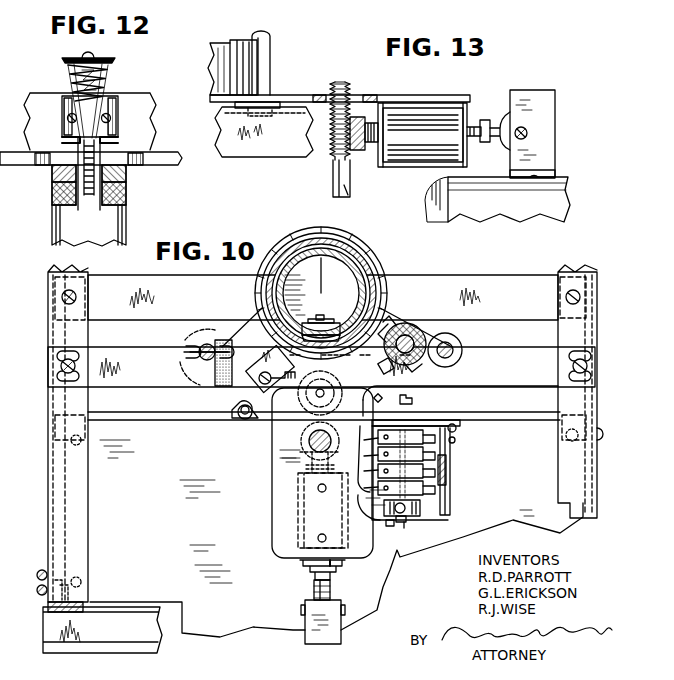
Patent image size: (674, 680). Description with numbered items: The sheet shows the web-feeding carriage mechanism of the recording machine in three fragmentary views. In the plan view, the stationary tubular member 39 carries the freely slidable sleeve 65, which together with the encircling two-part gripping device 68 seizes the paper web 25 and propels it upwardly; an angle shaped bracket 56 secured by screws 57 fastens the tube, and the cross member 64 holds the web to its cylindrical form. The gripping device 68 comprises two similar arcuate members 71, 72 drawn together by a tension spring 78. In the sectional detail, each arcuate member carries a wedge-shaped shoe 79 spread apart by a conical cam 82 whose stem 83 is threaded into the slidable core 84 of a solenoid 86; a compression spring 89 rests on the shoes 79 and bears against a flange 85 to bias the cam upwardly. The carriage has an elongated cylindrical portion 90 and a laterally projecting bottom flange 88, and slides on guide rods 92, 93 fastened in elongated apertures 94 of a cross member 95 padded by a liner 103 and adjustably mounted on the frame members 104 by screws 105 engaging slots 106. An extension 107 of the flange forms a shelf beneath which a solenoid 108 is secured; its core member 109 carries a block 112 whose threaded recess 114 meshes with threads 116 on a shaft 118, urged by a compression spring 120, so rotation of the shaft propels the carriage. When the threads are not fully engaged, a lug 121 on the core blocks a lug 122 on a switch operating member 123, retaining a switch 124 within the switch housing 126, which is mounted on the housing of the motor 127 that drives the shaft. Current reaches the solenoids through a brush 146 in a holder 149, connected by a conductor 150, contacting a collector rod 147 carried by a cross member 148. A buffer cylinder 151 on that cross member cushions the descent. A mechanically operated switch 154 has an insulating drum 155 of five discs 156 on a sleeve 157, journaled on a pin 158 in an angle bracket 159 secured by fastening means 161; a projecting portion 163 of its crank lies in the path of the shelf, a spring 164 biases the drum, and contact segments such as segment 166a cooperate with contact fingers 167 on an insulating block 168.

In FIG. 10, the paper web 25 is at (304, 242).
In FIG. 10, the tubular member 39 is at (362, 290).
In FIG. 10, the angle shaped bracket 56 is at (338, 324).
In FIG. 10, the screws 57 is at (318, 316).
In FIG. 10, the cross member 64 is at (420, 276).
In FIG. 10, the sleeve 65 is at (372, 264).
In FIG. 12, the gripping device 68 is at (158, 88).
In FIG. 12, the arcuate member 71 is at (150, 123).
In FIG. 12, the arcuate member 72 is at (32, 114).
In FIG. 12, the tension spring 78 is at (78, 112).
In FIG. 12, the wedge-shaped shoe 79 is at (110, 141).
In FIG. 12, the conical cam 82 is at (70, 73).
In FIG. 12, the stem 83 is at (72, 141).
In FIG. 12, the slidable core 84 is at (94, 190).
In FIG. 12, the flange 85 is at (66, 58).
In FIG. 12, the solenoid 86 is at (126, 221).
In FIG. 10, the solenoid 86 is at (412, 324).
In FIG. 13, the bottom flange 88 is at (280, 97).
In FIG. 10, the bottom flange 88 is at (250, 322).
In FIG. 12, the compression spring 89 is at (104, 75).
In FIG. 13, the elongated cylindrical portion 90 is at (238, 40).
In FIG. 10, the elongated cylindrical portion 90 is at (358, 246).
In FIG. 13, the guide rod 92 is at (270, 40).
In FIG. 10, the guide rod 92 is at (204, 380).
In FIG. 10, the guide rod 93 is at (446, 346).
In FIG. 10, the elongated apertures 94 is at (186, 356).
In FIG. 13, the cross member 95 is at (272, 116).
In FIG. 10, the cross member 95 is at (142, 382).
In FIG. 13, the liner 103 is at (236, 105).
In FIG. 10, the liner 103 is at (233, 366).
In FIG. 13, the frame members 104 is at (276, 155).
In FIG. 10, the frame members 104 is at (52, 330).
In FIG. 10, the screws 105 is at (62, 368).
In FIG. 10, the slots 106 is at (62, 356).
In FIG. 13, the extension 107 is at (424, 103).
In FIG. 10, the extension 107 is at (280, 506).
In FIG. 13, the solenoid 108 is at (404, 156).
In FIG. 10, the solenoid 108 is at (298, 526).
In FIG. 13, the core member 109 is at (479, 124).
In FIG. 10, the core member 109 is at (334, 568).
In FIG. 13, the block 112 is at (358, 120).
In FIG. 10, the block 112 is at (312, 456).
In FIG. 13, the threaded recess 114 is at (358, 150).
In FIG. 13, the threads 116 is at (336, 160).
In FIG. 13, the shaft 118 is at (336, 192).
In FIG. 10, the shaft 118 is at (300, 441).
In FIG. 13, the compression spring 120 is at (380, 118).
In FIG. 10, the compression spring 120 is at (306, 470).
In FIG. 13, the lug 121 is at (489, 122).
In FIG. 10, the lug 121 is at (316, 576).
In FIG. 13, the lug 122 is at (500, 142).
In FIG. 10, the lug 122 is at (314, 590).
In FIG. 13, the switch operating member 123 is at (508, 105).
In FIG. 10, the switch operating member 123 is at (330, 596).
In FIG. 13, the switch 124 is at (540, 143).
In FIG. 13, the switch housing 126 is at (556, 122).
In FIG. 10, the switch housing 126 is at (322, 640).
In FIG. 13, the motor 127 is at (567, 200).
In FIG. 10, the brush 146 is at (240, 406).
In FIG. 10, the collector rod 147 is at (242, 418).
In FIG. 10, the cross member 148 is at (164, 420).
In FIG. 10, the holder 149 is at (268, 358).
In FIG. 10, the conductor 150 is at (278, 380).
In FIG. 10, the cylinder 151 is at (328, 392).
In FIG. 10, the mechanically operated switch 154 is at (446, 454).
In FIG. 10, the insulating drum 155 is at (436, 456).
In FIG. 10, the discs 156 is at (363, 500).
In FIG. 10, the sleeve 157 is at (418, 512).
In FIG. 10, the pin 158 is at (408, 522).
In FIG. 10, the angle bracket 159 is at (447, 468).
In FIG. 10, the fastening means 161 is at (434, 410).
In FIG. 10, the projecting portion 163 is at (367, 404).
In FIG. 10, the spring 164 is at (458, 422).
In FIG. 10, the contact segment 166a is at (390, 522).
In FIG. 10, the contact fingers 167 is at (455, 440).
In FIG. 10, the insulating block 168 is at (450, 496).